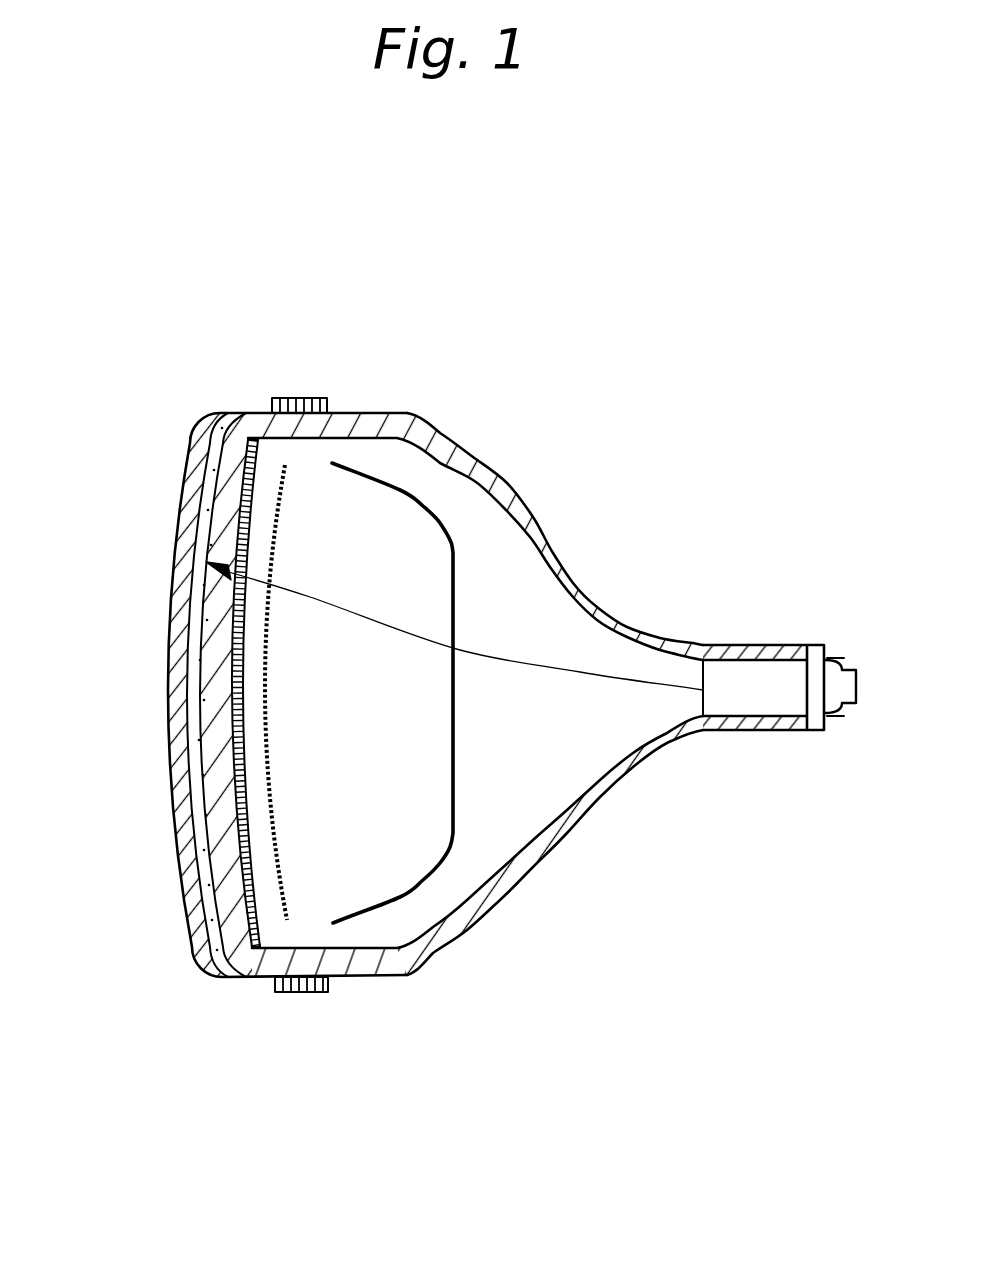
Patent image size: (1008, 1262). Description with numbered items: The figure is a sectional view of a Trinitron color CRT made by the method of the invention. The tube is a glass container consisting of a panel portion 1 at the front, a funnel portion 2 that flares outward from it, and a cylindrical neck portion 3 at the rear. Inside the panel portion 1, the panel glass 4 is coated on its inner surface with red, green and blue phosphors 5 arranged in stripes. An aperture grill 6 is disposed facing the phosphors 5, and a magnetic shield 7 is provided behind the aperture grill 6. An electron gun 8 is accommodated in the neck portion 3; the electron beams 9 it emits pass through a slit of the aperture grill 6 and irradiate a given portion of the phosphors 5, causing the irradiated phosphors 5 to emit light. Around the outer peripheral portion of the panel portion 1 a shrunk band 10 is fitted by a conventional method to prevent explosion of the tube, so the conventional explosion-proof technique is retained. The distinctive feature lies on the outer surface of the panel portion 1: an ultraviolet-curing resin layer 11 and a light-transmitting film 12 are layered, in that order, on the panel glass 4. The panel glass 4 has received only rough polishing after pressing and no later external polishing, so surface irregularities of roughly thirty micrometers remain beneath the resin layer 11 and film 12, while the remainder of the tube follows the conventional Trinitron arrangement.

The panel portion 1 is at (245, 357).
The funnel portion 2 is at (715, 352).
The neck portion 3 is at (837, 352).
The panel glass 4 is at (453, 930).
The phosphors 5 is at (252, 883).
The aperture grill 6 is at (282, 865).
The magnetic shield 7 is at (458, 777).
The electron gun 8 is at (762, 703).
The electron beams 9 is at (627, 683).
The shrunk band 10 is at (307, 993).
The ultraviolet-curing resin layer 11 is at (205, 847).
The light-transmitting film 12 is at (176, 786).